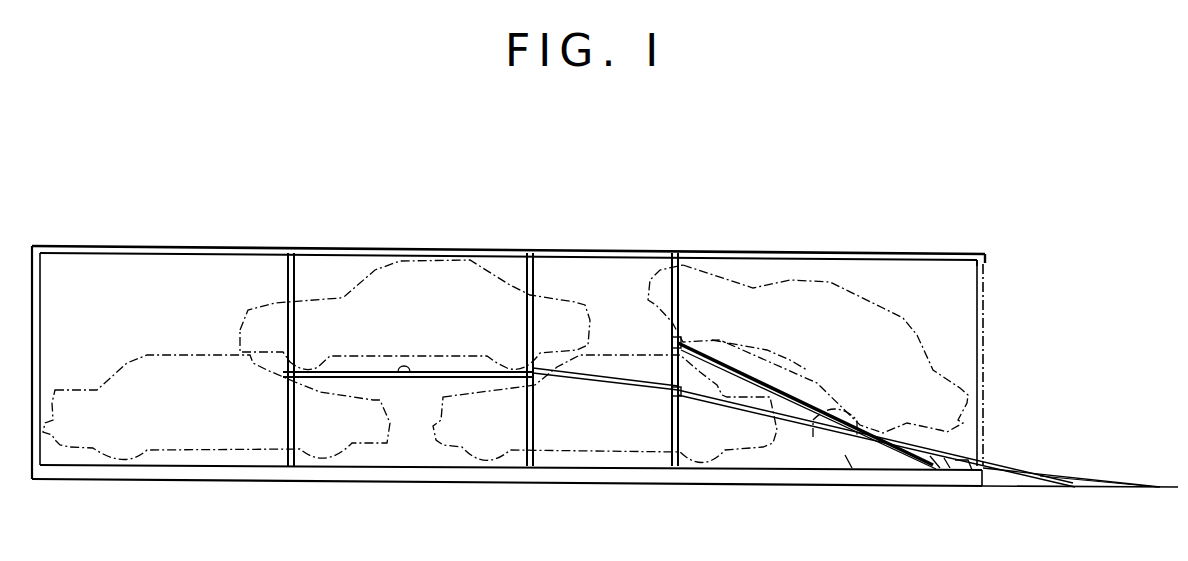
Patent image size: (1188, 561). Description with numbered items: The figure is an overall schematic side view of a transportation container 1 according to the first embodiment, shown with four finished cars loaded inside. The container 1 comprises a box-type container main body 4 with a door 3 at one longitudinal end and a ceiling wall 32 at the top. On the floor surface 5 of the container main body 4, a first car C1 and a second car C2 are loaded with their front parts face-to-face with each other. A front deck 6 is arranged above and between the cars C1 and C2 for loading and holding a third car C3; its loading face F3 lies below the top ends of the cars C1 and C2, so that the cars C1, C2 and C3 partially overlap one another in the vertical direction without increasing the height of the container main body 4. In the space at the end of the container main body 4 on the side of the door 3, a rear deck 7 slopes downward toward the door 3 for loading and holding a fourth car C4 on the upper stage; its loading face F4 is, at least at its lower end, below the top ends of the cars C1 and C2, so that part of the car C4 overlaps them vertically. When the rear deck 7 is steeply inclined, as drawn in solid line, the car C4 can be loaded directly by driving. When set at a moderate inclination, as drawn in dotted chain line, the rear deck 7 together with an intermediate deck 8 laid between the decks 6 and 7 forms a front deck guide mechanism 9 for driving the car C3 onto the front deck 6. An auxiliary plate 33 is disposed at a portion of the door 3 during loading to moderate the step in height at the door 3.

The container 1 is at (605, 342).
The door 3 is at (984, 323).
The container main body 4 is at (253, 242).
The floor surface 5 is at (403, 461).
The front deck 6 is at (371, 374).
The rear deck 7 is at (813, 418).
The intermediate deck 8 is at (580, 381).
The front deck guide mechanism 9 is at (617, 385).
The ceiling wall 32 is at (790, 254).
The auxiliary plate 33 is at (1068, 470).
The first car C1 is at (177, 438).
The second car C2 is at (567, 448).
The third car C3 is at (453, 258).
The fourth car C4 is at (883, 333).
The loading face of the front deck F3 is at (410, 374).
The loading face of the rear deck F4 is at (853, 412).